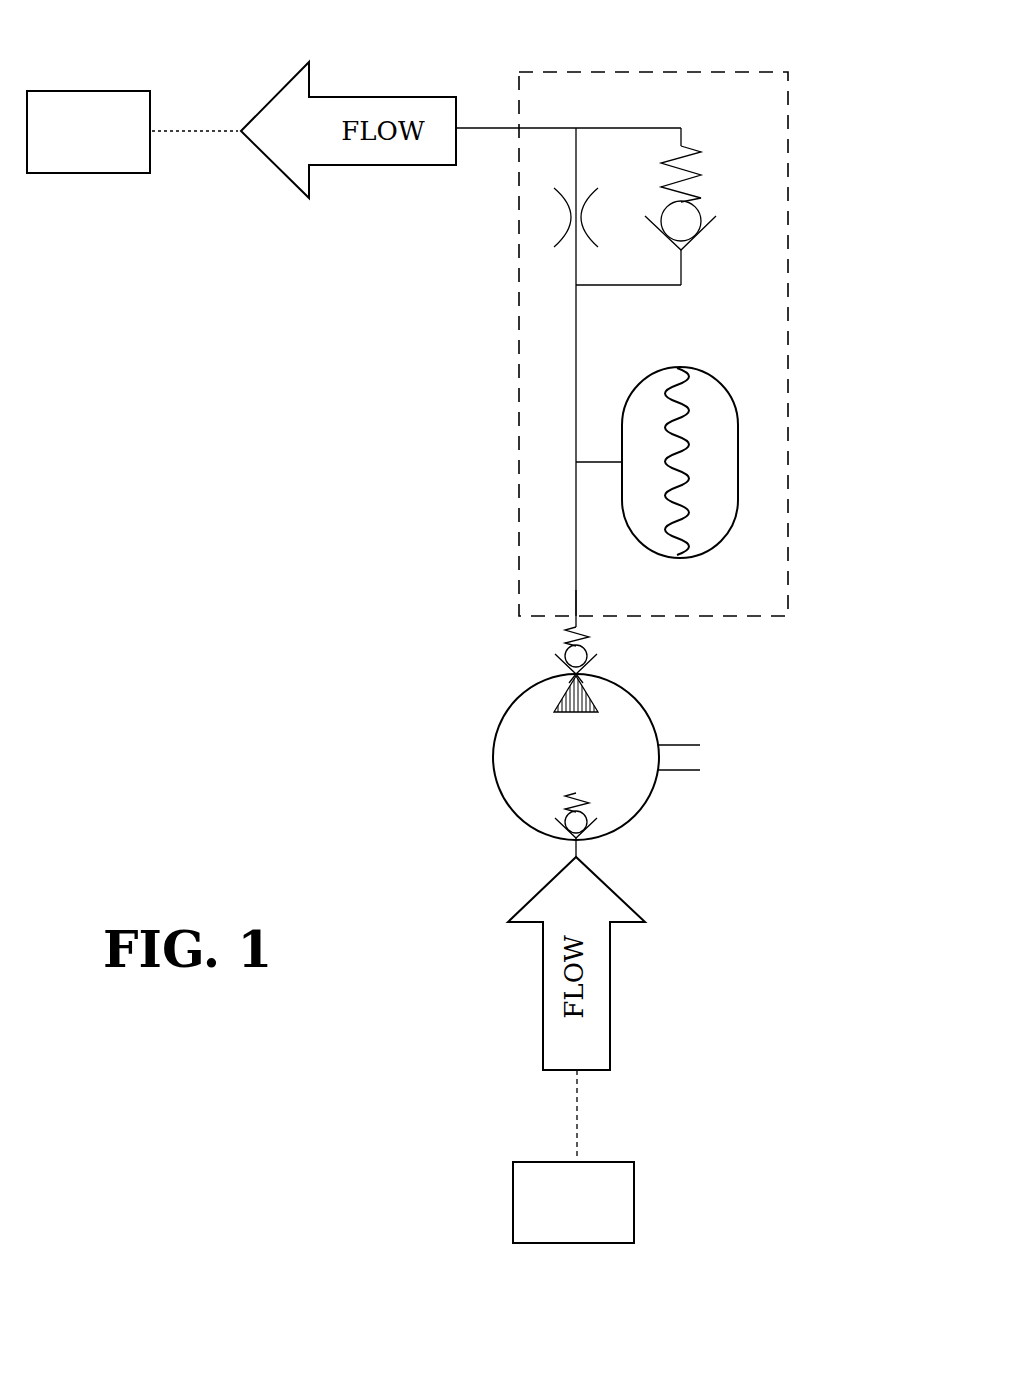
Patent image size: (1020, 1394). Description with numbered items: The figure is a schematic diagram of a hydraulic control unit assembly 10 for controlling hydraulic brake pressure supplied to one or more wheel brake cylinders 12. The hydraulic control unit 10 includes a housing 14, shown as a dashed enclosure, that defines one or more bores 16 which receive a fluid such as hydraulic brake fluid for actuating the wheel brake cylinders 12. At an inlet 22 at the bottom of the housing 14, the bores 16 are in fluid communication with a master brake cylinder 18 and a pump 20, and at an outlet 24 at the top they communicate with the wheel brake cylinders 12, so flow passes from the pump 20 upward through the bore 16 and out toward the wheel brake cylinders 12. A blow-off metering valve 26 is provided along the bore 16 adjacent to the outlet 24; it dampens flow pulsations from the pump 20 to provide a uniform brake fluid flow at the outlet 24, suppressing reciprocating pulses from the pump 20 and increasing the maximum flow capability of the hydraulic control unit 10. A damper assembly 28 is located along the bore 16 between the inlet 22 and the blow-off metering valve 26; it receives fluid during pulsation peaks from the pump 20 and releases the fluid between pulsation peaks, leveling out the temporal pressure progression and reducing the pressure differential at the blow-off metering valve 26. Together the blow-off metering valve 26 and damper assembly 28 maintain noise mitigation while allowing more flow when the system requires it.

The hydraulic control unit assembly 10 is at (850, 278).
The wheel brake cylinders 12 is at (101, 146).
The housing 14 is at (789, 117).
The bores 16 is at (572, 326).
The master brake cylinder 18 is at (588, 1218).
The pump 20 is at (537, 763).
The inlet 22 is at (576, 604).
The outlet 24 is at (552, 128).
The blow-off metering valve 26 is at (651, 122).
The damper assembly 28 is at (745, 425).